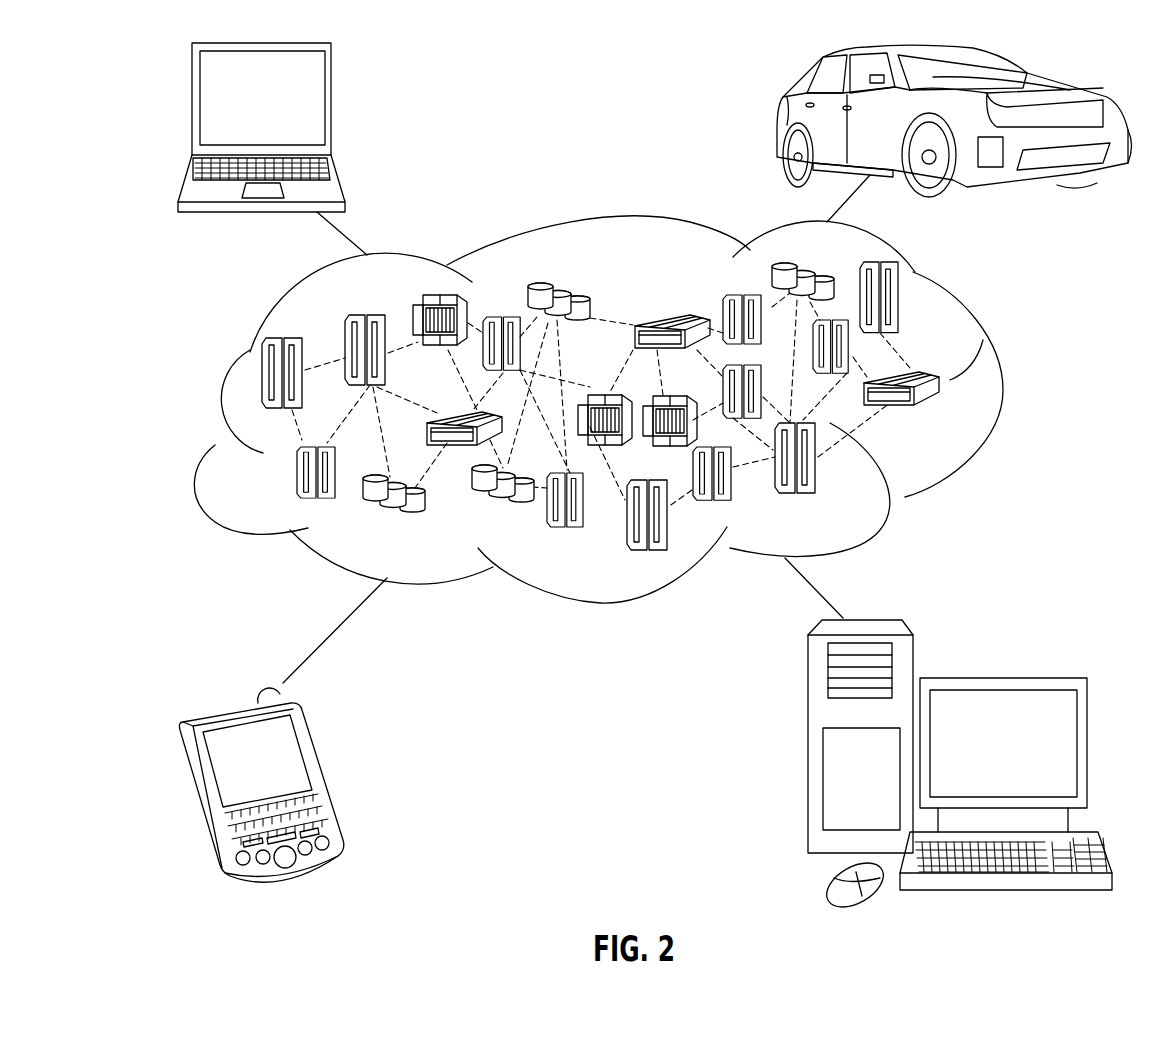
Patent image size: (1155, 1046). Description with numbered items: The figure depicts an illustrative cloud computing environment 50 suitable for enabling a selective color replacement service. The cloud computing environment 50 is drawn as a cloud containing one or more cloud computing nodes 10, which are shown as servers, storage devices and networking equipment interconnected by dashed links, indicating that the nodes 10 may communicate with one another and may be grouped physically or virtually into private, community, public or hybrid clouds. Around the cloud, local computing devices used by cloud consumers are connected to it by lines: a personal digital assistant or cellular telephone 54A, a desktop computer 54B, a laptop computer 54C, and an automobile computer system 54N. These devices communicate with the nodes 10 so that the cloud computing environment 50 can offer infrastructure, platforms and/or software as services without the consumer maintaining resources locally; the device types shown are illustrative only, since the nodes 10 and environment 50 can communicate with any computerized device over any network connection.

The cloud computing nodes 10 is at (943, 417).
The cloud computing environment 50 is at (1003, 386).
The personal digital assistant (PDA) or cellular telephone 54A is at (322, 775).
The desktop computer 54B is at (1000, 678).
The laptop computer 54C is at (333, 107).
The automobile computer system 54N is at (778, 122).